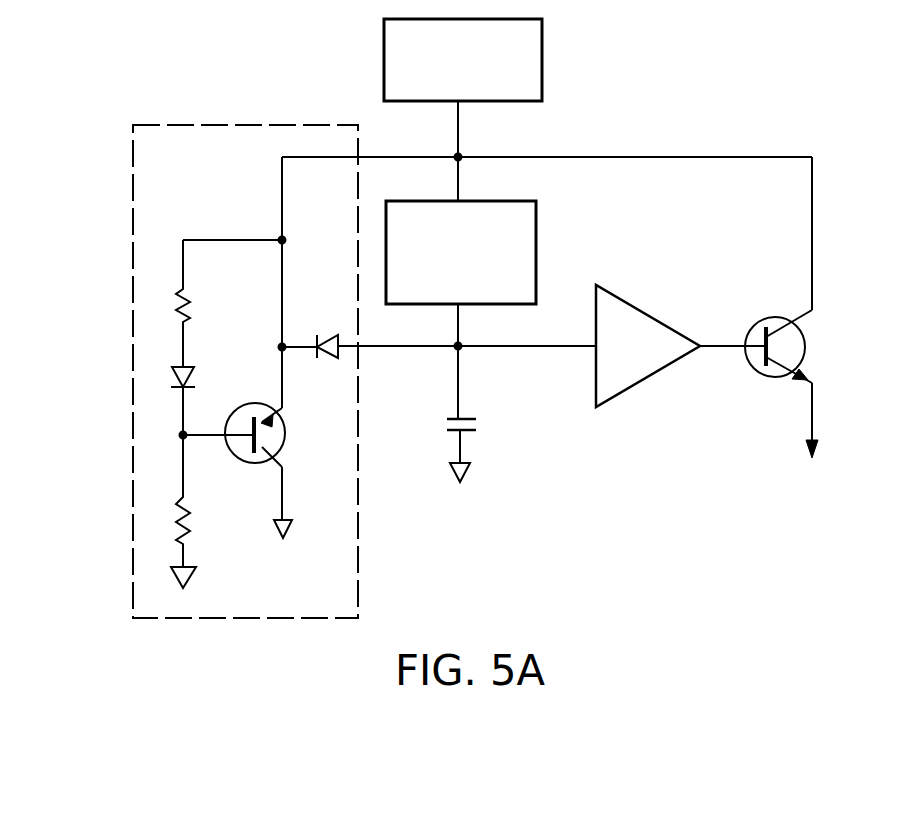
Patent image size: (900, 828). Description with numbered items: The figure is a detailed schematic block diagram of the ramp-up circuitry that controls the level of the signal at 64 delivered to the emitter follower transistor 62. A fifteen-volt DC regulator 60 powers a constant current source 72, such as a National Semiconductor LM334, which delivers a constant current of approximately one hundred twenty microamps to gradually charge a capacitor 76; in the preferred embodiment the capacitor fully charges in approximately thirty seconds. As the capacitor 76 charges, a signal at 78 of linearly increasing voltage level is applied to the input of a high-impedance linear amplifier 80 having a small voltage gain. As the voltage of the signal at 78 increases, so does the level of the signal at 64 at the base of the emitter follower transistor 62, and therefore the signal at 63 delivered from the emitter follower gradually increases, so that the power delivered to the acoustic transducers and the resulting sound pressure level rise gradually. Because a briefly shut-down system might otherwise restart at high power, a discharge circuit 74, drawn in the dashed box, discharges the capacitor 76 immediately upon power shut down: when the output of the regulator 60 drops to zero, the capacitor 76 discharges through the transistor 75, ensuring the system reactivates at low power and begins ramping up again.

The +15 VDC regulator 60 is at (542, 63).
The constant current source 72 is at (536, 228).
The discharge circuit 74 is at (245, 371).
The transistor 75 is at (252, 465).
The capacitor 76 is at (466, 435).
The signal 78 is at (534, 346).
The high-impedance linear amplifier 80 is at (648, 346).
The emitter follower transistor 62 is at (765, 318).
The signal 64 is at (723, 350).
The signal 63 is at (812, 420).